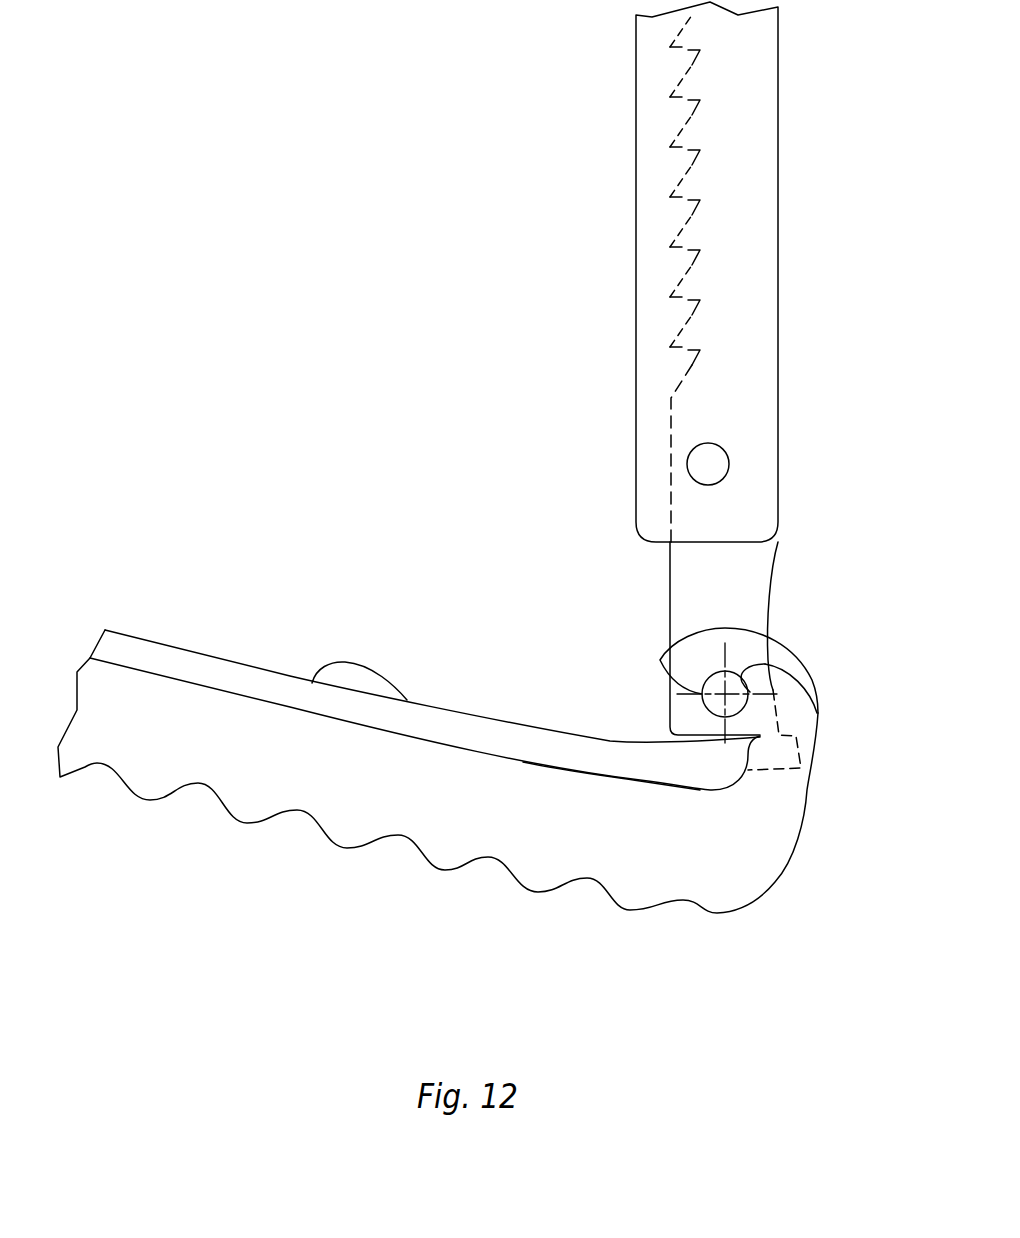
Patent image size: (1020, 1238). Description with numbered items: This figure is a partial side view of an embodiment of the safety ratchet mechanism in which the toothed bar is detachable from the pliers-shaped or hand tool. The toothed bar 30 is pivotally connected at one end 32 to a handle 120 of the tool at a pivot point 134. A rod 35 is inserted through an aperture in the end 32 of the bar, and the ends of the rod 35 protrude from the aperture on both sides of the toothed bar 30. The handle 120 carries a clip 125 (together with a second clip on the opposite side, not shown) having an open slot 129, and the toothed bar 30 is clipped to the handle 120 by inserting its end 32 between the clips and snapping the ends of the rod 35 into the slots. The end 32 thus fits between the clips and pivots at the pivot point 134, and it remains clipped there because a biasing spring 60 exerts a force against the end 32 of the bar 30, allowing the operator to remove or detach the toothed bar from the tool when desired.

The toothed bar 30 is at (798, 285).
The end of the toothed bar 32 is at (677, 727).
The biasing spring 60 is at (458, 723).
The open slot 129 is at (583, 674).
The clip 125 is at (660, 660).
The rod 35 is at (765, 664).
The pivot point 134 is at (817, 712).
The handle 120 is at (653, 875).